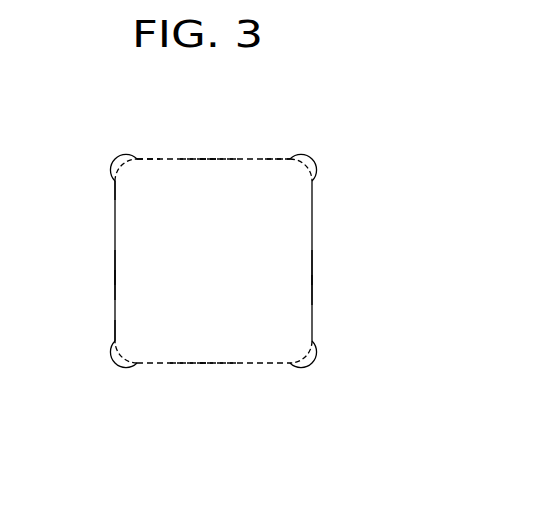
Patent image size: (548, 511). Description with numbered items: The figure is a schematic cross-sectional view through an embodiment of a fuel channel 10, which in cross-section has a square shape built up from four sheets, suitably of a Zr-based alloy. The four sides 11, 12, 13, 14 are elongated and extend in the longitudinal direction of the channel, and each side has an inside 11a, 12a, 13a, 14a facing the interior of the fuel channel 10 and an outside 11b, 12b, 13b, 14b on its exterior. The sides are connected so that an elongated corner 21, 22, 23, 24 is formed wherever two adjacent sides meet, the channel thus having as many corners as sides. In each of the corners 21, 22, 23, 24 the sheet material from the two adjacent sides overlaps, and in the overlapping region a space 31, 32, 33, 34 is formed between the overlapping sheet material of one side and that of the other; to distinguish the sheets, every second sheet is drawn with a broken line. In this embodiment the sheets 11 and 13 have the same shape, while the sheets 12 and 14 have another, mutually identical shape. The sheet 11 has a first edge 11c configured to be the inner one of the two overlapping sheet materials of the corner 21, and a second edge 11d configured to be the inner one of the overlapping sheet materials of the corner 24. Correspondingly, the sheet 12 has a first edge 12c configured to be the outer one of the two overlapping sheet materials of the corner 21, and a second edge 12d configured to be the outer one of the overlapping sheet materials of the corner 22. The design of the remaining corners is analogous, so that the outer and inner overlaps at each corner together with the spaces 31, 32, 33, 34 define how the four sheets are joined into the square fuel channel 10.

The fuel channel 10 is at (281, 121).
The side 11 is at (256, 158).
The inside 11a is at (223, 164).
The outside 11b is at (199, 156).
The first edge 11c is at (120, 172).
The second edge 11d is at (304, 171).
The side 12 is at (112, 230).
The inside 12a is at (120, 285).
The outside 12b is at (112, 268).
The first edge 12c is at (115, 172).
The second edge 12d is at (117, 352).
The side 13 is at (260, 365).
The inside 13a is at (221, 360).
The outside 13b is at (190, 366).
The side 14 is at (313, 232).
The inside 14a is at (310, 291).
The outside 14b is at (314, 268).
The corner 21 is at (99, 140).
The corner 22 is at (107, 385).
The corner 23 is at (329, 370).
The corner 24 is at (330, 151).
The space 31 is at (124, 161).
The space 32 is at (125, 368).
The space 33 is at (305, 358).
The space 34 is at (310, 168).